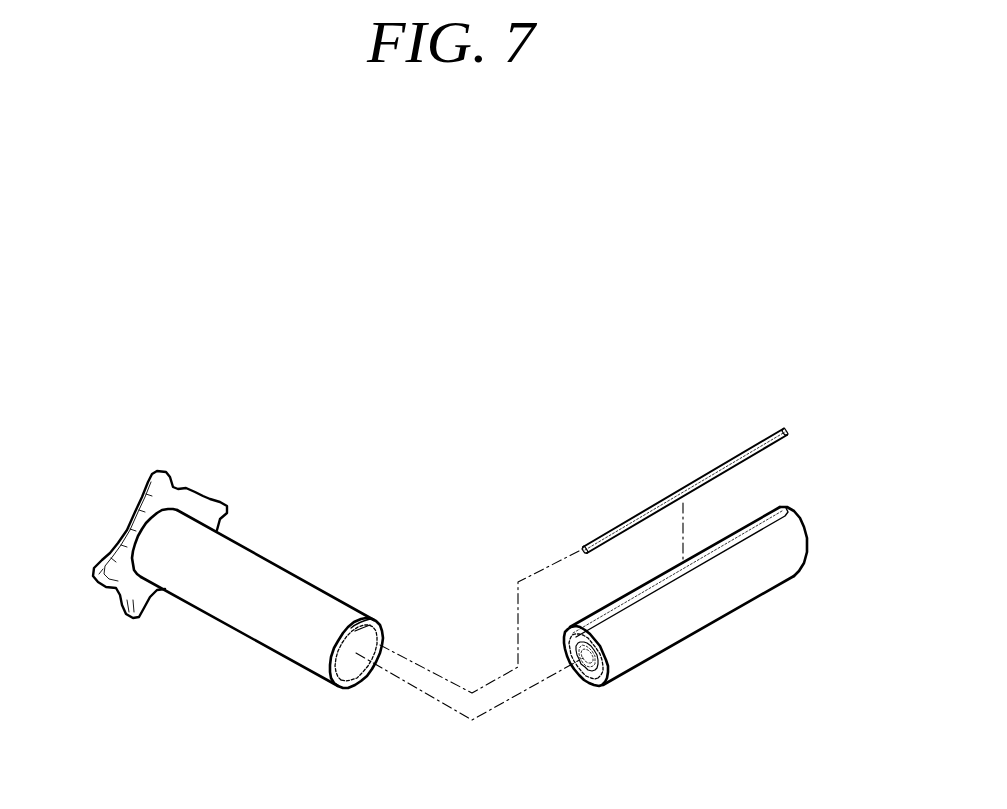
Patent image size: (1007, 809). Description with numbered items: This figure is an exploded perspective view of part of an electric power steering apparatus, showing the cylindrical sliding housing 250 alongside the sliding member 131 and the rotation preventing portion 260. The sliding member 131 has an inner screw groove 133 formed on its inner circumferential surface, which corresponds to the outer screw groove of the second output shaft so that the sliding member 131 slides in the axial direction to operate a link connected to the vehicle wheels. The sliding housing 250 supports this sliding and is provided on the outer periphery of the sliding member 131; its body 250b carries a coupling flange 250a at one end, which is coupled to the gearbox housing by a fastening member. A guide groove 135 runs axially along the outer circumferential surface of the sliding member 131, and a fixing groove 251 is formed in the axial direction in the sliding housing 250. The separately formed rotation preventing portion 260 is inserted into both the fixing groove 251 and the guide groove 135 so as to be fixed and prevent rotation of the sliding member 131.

The sliding housing 250 is at (243, 589).
The coupling flange 250a is at (157, 594).
The handle tube 250b is at (242, 603).
The fixing groove 251 is at (358, 616).
The rotation preventing portion 260 is at (660, 477).
The sliding member 131 is at (684, 634).
The inner screw groove 133 is at (578, 681).
The guide groove 135 is at (630, 613).